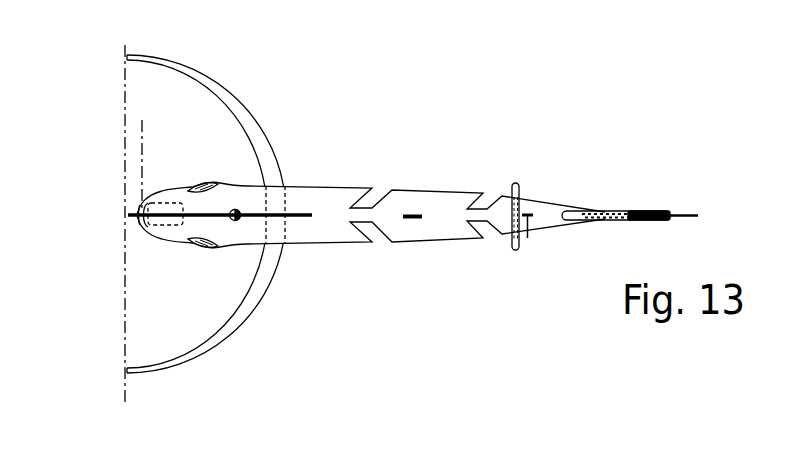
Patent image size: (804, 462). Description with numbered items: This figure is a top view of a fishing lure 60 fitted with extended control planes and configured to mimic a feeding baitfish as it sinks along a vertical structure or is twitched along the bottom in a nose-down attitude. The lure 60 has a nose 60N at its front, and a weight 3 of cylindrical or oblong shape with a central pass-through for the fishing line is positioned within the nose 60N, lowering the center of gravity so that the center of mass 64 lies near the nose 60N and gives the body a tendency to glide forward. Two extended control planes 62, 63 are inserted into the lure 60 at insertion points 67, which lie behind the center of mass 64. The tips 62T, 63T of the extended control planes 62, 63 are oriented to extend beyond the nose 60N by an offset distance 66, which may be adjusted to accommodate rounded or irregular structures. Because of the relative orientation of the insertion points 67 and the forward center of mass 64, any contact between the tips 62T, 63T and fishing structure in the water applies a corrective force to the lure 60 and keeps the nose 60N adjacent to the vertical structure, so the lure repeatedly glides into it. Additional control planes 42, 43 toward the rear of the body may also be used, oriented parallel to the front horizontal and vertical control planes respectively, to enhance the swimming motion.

The fishing lure 60 is at (444, 118).
The extended control plane 62 is at (307, 208).
The extended control plane 63 is at (259, 126).
The tip of extended control plane 63T is at (123, 55).
The offset distance 66 is at (167, 135).
The tip of extended control plane 62T is at (123, 213).
The nose 60N is at (141, 232).
The weight 3 is at (172, 226).
The center of mass 64 is at (233, 211).
The insertion points 67 is at (301, 229).
The control plane 42 is at (517, 184).
The control plane 43 is at (528, 239).